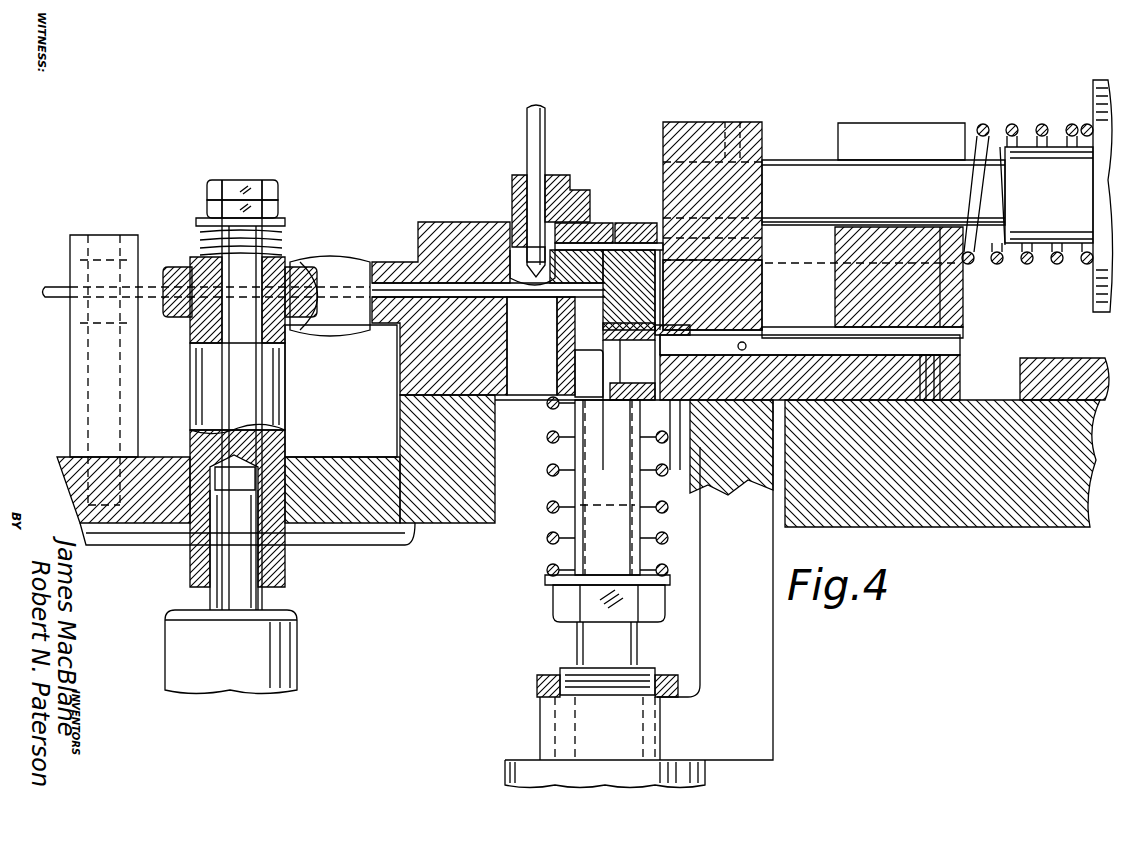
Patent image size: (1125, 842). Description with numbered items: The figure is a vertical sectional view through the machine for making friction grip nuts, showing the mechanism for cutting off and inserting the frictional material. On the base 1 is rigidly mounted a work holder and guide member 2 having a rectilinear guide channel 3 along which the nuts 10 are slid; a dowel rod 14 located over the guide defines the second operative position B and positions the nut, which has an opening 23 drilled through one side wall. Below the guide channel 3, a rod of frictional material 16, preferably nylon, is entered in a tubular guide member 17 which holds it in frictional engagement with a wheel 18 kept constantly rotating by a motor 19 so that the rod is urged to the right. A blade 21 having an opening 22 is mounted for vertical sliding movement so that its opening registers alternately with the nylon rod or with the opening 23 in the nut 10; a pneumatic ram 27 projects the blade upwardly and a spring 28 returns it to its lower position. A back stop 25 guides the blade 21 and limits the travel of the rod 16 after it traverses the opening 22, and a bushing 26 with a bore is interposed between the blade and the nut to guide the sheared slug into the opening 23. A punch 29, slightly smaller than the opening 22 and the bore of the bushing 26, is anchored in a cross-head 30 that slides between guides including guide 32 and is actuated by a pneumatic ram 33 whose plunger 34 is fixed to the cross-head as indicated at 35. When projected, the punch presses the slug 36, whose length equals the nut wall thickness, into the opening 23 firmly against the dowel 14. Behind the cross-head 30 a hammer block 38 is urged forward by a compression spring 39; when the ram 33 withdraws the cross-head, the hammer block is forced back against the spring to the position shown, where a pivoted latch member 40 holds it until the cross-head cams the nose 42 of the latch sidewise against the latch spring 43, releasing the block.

The base 1 is at (998, 510).
The work holder and guide member 2 is at (418, 235).
The guide channel 3 is at (517, 250).
The nut 10 is at (510, 247).
The dowel rod 14 is at (535, 140).
The frictional material 16 is at (45, 290).
The tubular guide member 17 is at (150, 268).
The wheel 18 is at (288, 282).
The motor 19 is at (268, 680).
The blade 21 is at (615, 230).
The opening 22 is at (603, 253).
The opening 23 is at (517, 272).
The back stop 25 is at (637, 233).
The bushing 26 is at (568, 262).
The pneumatic ram 27 is at (520, 770).
The spring 28 is at (546, 553).
The punch 29 is at (663, 270).
The cross-head 30 is at (700, 148).
The guide 32 is at (825, 291).
The pneumatic ram 33 is at (1105, 120).
The plunger 34 is at (800, 185).
The fixing of plunger to cross-head 35 is at (738, 124).
The slug 36 is at (552, 237).
The hammer block 38 is at (940, 297).
The compression spring 39 is at (977, 128).
The latch member 40 is at (852, 345).
The nose 42 is at (748, 340).
The latch spring 43 is at (748, 343).
The second operative position B is at (512, 190).